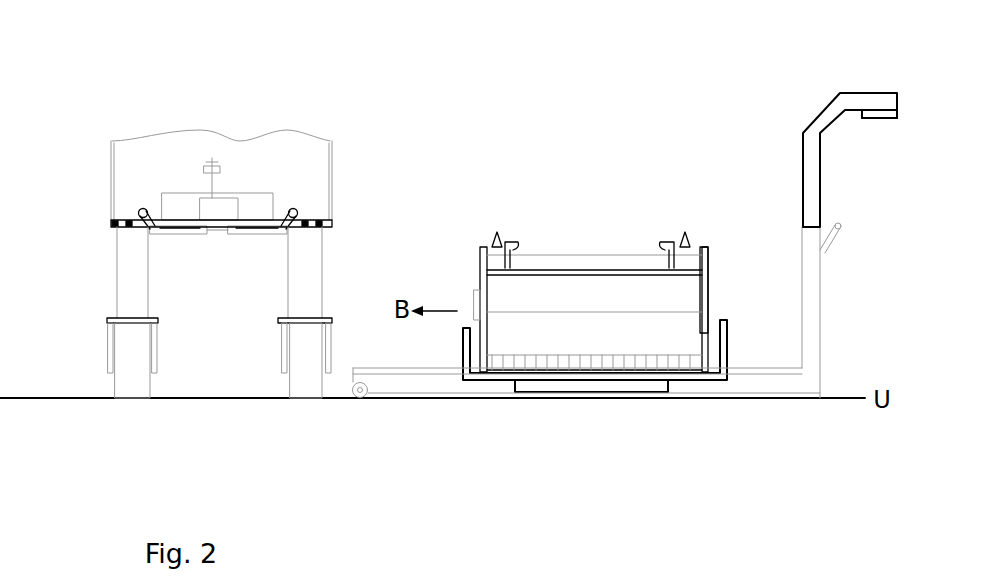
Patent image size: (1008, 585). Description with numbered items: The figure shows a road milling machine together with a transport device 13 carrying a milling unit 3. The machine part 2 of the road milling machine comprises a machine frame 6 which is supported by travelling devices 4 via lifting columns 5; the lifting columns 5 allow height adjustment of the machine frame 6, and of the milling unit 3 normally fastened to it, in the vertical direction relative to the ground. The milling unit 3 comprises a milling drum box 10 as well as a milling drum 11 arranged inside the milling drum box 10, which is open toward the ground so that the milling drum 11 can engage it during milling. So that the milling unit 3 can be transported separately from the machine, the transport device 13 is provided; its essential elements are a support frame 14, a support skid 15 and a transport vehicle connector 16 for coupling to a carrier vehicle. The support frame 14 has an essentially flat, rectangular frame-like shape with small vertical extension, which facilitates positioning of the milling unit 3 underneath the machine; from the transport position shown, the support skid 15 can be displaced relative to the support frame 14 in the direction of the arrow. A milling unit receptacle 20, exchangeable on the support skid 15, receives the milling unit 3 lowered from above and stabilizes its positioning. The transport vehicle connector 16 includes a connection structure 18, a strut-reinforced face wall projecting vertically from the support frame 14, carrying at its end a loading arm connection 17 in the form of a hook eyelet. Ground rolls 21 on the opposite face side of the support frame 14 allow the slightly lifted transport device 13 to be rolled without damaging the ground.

The machine part 2 is at (289, 75).
The milling unit 3 is at (611, 226).
The travelling devices 4 is at (128, 360).
The lifting columns 5 is at (118, 267).
The machine frame 6 is at (332, 198).
The milling drum box 10 is at (632, 298).
The milling drum 11 is at (548, 363).
The transport device 13 is at (798, 84).
The support frame 14 is at (752, 387).
The support skid 15 is at (585, 387).
The transport vehicle connector 16 is at (821, 134).
The loading arm connection 17 is at (880, 115).
The connection structure 18 is at (808, 292).
The milling unit receptacle 20 is at (710, 377).
The ground rolls 21 is at (362, 393).